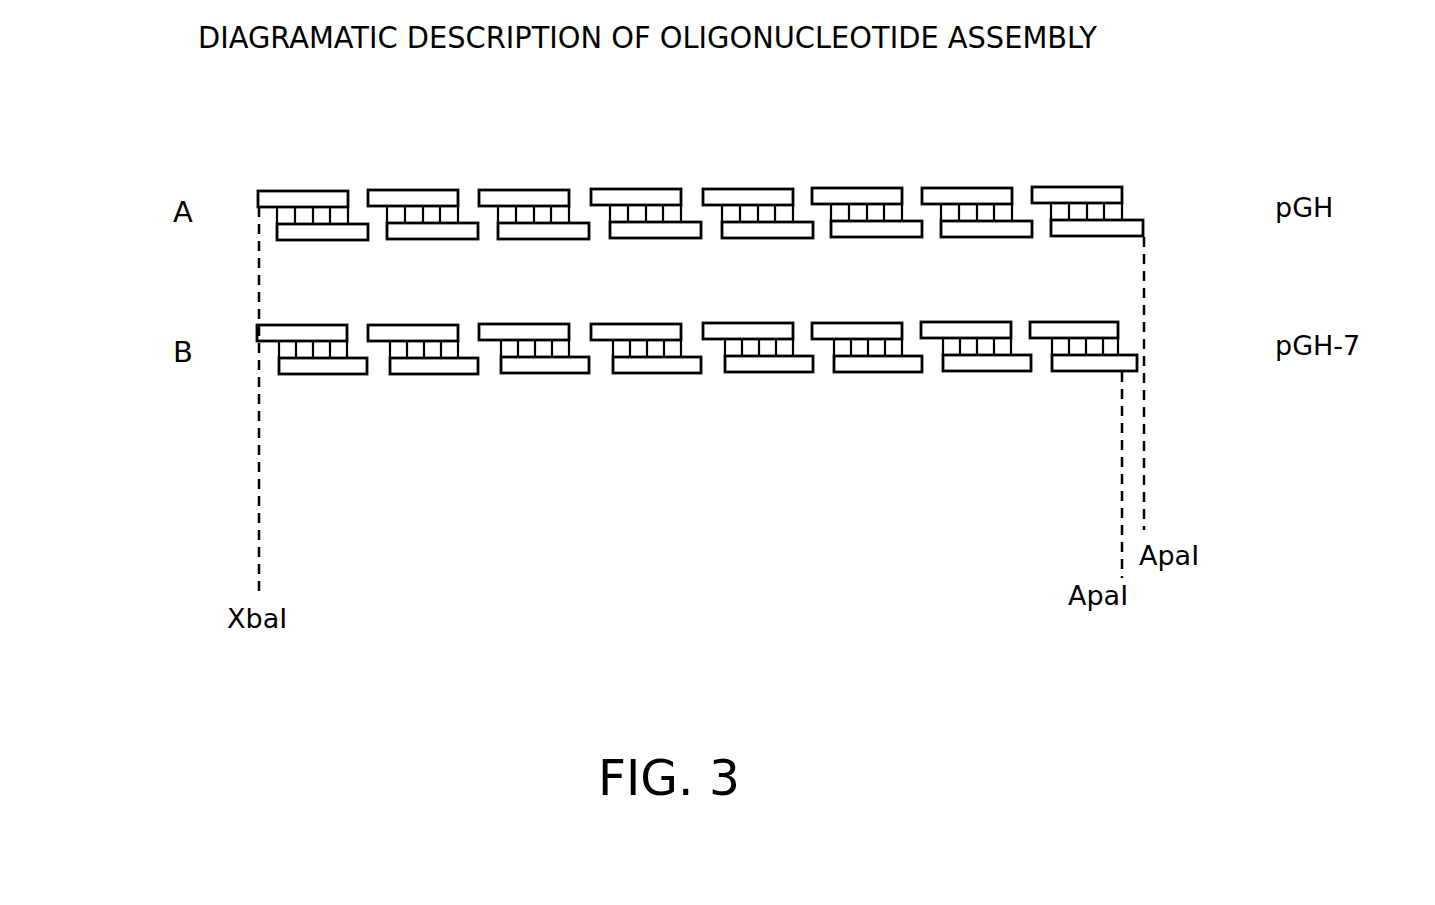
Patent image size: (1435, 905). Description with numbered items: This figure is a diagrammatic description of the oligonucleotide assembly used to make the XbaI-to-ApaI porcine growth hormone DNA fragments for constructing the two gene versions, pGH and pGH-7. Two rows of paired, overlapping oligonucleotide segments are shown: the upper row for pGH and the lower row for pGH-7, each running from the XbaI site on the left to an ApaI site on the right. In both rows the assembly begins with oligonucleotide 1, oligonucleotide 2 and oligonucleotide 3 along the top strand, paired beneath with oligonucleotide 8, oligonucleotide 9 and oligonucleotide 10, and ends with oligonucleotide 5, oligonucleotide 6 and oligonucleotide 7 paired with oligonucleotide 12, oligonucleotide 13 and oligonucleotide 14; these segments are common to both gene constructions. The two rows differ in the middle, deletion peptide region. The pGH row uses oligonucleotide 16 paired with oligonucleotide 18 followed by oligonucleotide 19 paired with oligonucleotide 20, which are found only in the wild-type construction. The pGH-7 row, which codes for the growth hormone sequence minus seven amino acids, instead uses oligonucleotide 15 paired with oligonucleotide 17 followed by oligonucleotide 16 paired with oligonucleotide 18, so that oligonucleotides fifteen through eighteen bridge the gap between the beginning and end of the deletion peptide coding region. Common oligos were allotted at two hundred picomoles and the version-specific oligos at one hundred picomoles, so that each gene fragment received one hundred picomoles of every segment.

The oligonucleotide 1 is at (302, 255).
The oligonucleotide 2 is at (413, 255).
The oligonucleotide 3 is at (524, 255).
The oligonucleotide 5 is at (857, 254).
The oligonucleotide 6 is at (966, 254).
The oligonucleotide 7 is at (1076, 254).
The oligonucleotide 8 is at (322, 317).
The oligonucleotide 9 is at (432, 317).
The oligonucleotide 10 is at (543, 317).
The oligonucleotide 12 is at (876, 316).
The oligonucleotide 13 is at (986, 316).
The oligonucleotide 14 is at (1097, 315).
The oligonucleotide 15 is at (636, 324).
The oligonucleotide 16 is at (692, 254).
The oligonucleotide 17 is at (657, 384).
The oligonucleotide 18 is at (711, 316).
The oligonucleotide 19 is at (748, 187).
The oligonucleotide 20 is at (767, 249).